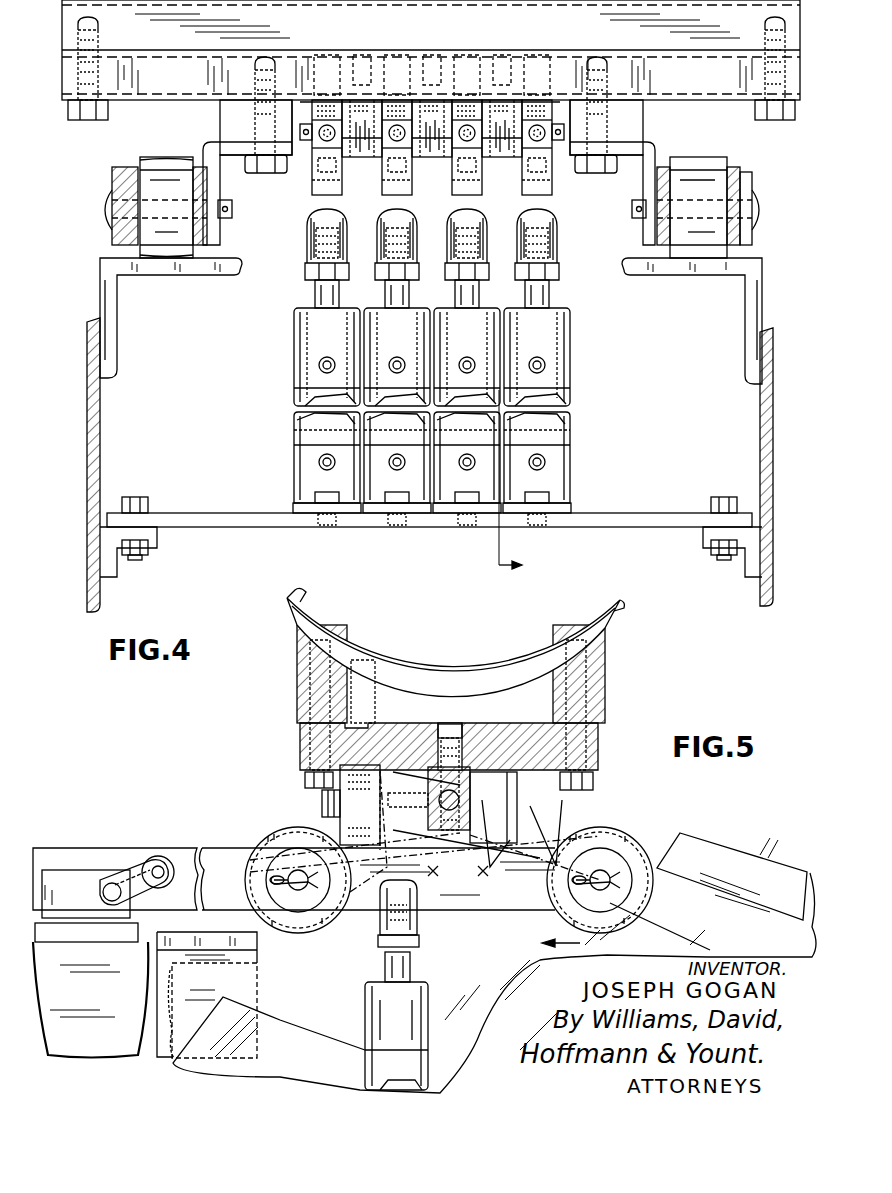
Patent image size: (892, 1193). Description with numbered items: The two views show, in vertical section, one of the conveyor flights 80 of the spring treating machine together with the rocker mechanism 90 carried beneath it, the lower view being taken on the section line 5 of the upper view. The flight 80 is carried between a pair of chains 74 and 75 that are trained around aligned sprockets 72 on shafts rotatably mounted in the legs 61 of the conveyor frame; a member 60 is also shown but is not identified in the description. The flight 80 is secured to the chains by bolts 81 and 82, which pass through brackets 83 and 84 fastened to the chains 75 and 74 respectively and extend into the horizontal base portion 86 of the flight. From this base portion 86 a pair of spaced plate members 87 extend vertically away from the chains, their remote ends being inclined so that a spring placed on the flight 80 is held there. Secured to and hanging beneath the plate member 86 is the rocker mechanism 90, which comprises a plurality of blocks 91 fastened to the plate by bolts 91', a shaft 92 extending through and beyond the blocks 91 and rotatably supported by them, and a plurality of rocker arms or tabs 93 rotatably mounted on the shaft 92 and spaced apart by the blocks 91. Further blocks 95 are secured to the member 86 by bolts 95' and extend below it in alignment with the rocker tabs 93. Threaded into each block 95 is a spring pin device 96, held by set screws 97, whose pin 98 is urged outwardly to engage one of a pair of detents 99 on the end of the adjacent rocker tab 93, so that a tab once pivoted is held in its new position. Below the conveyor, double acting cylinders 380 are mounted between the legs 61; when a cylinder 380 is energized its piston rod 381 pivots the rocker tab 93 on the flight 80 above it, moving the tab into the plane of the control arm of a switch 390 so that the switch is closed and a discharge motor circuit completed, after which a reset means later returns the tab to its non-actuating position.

In FIG. 4, the section line 5— 5 is at (520, 484).
In FIG. 4, the support bracket 60 is at (120, 316).
In FIG. 5, the support bracket 60 is at (257, 978).
In FIG. 4, the legs 61 is at (87, 470).
In FIG. 5, the legs 61 is at (276, 967).
In FIG. 5, the sprockets 72 is at (737, 850).
In FIG. 4, the chain 74 is at (140, 165).
In FIG. 4, the chain 75 is at (728, 170).
In FIG. 5, the chain 75 is at (652, 860).
In FIG. 5, the conveyor flights 80 is at (612, 670).
In FIG. 4, the bolt 81 is at (596, 176).
In FIG. 4, the bolt 82 is at (267, 176).
In FIG. 4, the bracket 83 is at (634, 166).
In FIG. 4, the bracket 84 is at (222, 190).
In FIG. 4, the horizontal base portion 86 is at (714, 100).
In FIG. 5, the horizontal base portion 86 is at (541, 770).
In FIG. 5, the spaced plate members 87 is at (297, 686).
In FIG. 5, the rocker mechanism 90 is at (300, 802).
In FIG. 4, the blocks 91 is at (432, 146).
In FIG. 5, the blocks 91 is at (474, 767).
In FIG. 4, the bolts 91' is at (438, 57).
In FIG. 5, the bolts 91' is at (458, 715).
In FIG. 4, the shaft 92 is at (573, 158).
In FIG. 4, the rocker arms 93 is at (313, 200).
In FIG. 5, the rocker arms 93 is at (516, 836).
In FIG. 4, the blocks 95 is at (418, 153).
In FIG. 5, the blocks 95 is at (336, 807).
In FIG. 4, the bolts 95' is at (436, 58).
In FIG. 5, the bolts 95' is at (365, 700).
In FIG. 5, the spring pin device 96 is at (384, 815).
In FIG. 5, the set screws 97 is at (302, 828).
In FIG. 5, the pin 98 is at (393, 790).
In FIG. 5, the detents 99 is at (430, 775).
In FIG. 4, the double acting cylinders 380 is at (302, 354).
In FIG. 5, the double acting cylinders 380 is at (428, 992).
In FIG. 4, the piston rod 381 is at (315, 302).
In FIG. 5, the piston rod 381 is at (419, 940).
In FIG. 5, the switch 390 is at (80, 865).